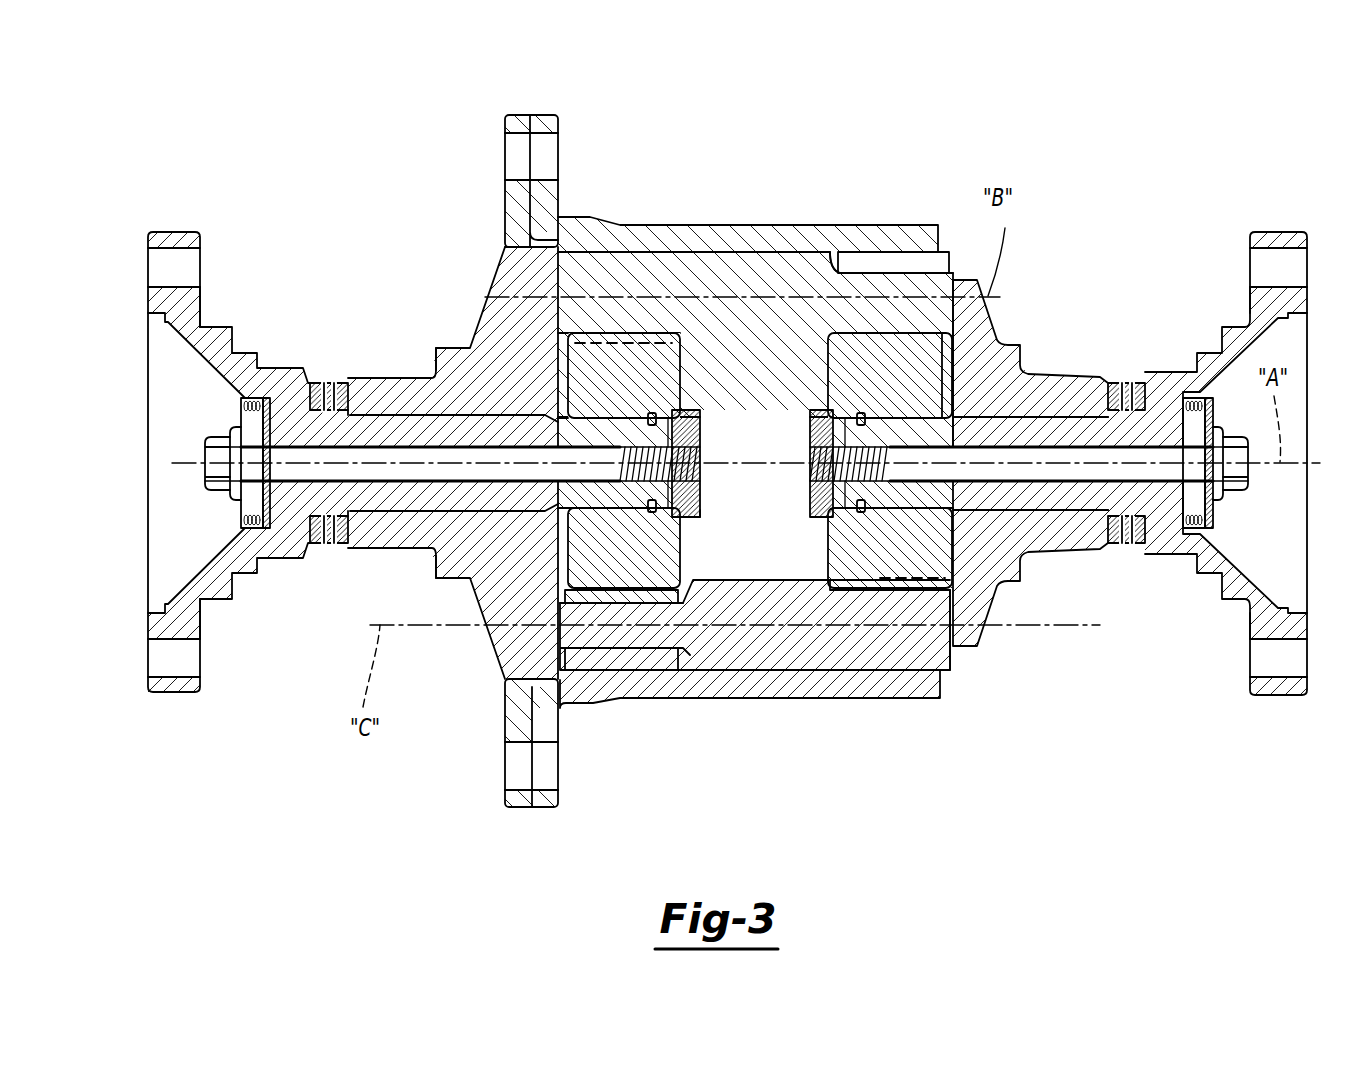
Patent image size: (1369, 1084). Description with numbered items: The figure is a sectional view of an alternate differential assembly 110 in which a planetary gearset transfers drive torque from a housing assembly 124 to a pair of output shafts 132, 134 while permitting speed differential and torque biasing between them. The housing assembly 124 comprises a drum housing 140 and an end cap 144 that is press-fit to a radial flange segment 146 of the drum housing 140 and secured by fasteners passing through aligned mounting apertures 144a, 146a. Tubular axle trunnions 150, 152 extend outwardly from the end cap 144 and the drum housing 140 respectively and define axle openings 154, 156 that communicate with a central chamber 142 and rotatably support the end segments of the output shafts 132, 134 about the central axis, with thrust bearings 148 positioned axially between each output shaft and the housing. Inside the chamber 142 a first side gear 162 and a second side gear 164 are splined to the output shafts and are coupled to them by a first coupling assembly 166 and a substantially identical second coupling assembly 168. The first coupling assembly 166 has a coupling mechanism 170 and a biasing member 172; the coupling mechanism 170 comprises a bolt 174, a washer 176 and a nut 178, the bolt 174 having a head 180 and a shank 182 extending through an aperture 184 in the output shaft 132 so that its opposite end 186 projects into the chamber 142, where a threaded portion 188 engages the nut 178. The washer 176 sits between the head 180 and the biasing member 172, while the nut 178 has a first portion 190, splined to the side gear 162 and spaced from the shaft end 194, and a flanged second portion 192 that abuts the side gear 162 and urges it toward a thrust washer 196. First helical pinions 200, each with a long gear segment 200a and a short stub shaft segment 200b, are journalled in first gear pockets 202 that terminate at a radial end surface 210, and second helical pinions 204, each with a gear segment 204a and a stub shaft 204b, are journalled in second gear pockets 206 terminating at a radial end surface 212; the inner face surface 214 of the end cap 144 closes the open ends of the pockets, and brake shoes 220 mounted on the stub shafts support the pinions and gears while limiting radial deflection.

The differential assembly 110 is at (233, 116).
The housing assembly 124 is at (965, 186).
The output shaft 132 is at (292, 398).
The output shaft 134 is at (1167, 395).
The drum housing 140 is at (637, 238).
The chamber 142 is at (738, 439).
The end cap 144 is at (535, 250).
The mounting apertures 144a is at (512, 150).
The radial flange segment 146 is at (538, 800).
The mounting apertures 146a is at (545, 790).
The thrust bearings 148 is at (325, 390).
The axle trunnion 150 is at (365, 396).
The axle trunnion 152 is at (1075, 540).
The axle opening 154 is at (433, 497).
The axle opening 156 is at (1055, 488).
The first side gear 162 is at (580, 566).
The second side gear 164 is at (893, 559).
The first coupling assembly 166 is at (693, 528).
The second coupling assembly 168 is at (792, 402).
The coupling mechanism 170 is at (486, 492).
The biasing member 172 is at (265, 530).
The bolt 174 is at (207, 450).
The washer 176 is at (243, 503).
The nut 178 is at (683, 493).
The head 180 is at (210, 468).
The shank 182 is at (425, 455).
The aperture 184 is at (280, 452).
The opposite end 186 is at (640, 445).
The threaded portion 188 is at (637, 481).
The first portion 190 is at (683, 510).
The second portion 192 is at (698, 517).
The end 194 is at (672, 428).
The thrust washer 196 is at (562, 362).
The first helical pinions 200 is at (677, 258).
The gear segment 200a is at (607, 268).
The stub shaft segment 200b is at (864, 283).
The first gear pockets 202 is at (803, 268).
The second helical pinions 204 is at (755, 658).
The gear segment 204a is at (835, 650).
The stub shaft 204b is at (565, 633).
The second gear pockets 206 is at (623, 657).
The radial end surface 210 is at (917, 327).
The radial end surface 212 is at (937, 617).
The inner face surface 214 is at (577, 370).
The brake shoes 220 is at (912, 262).